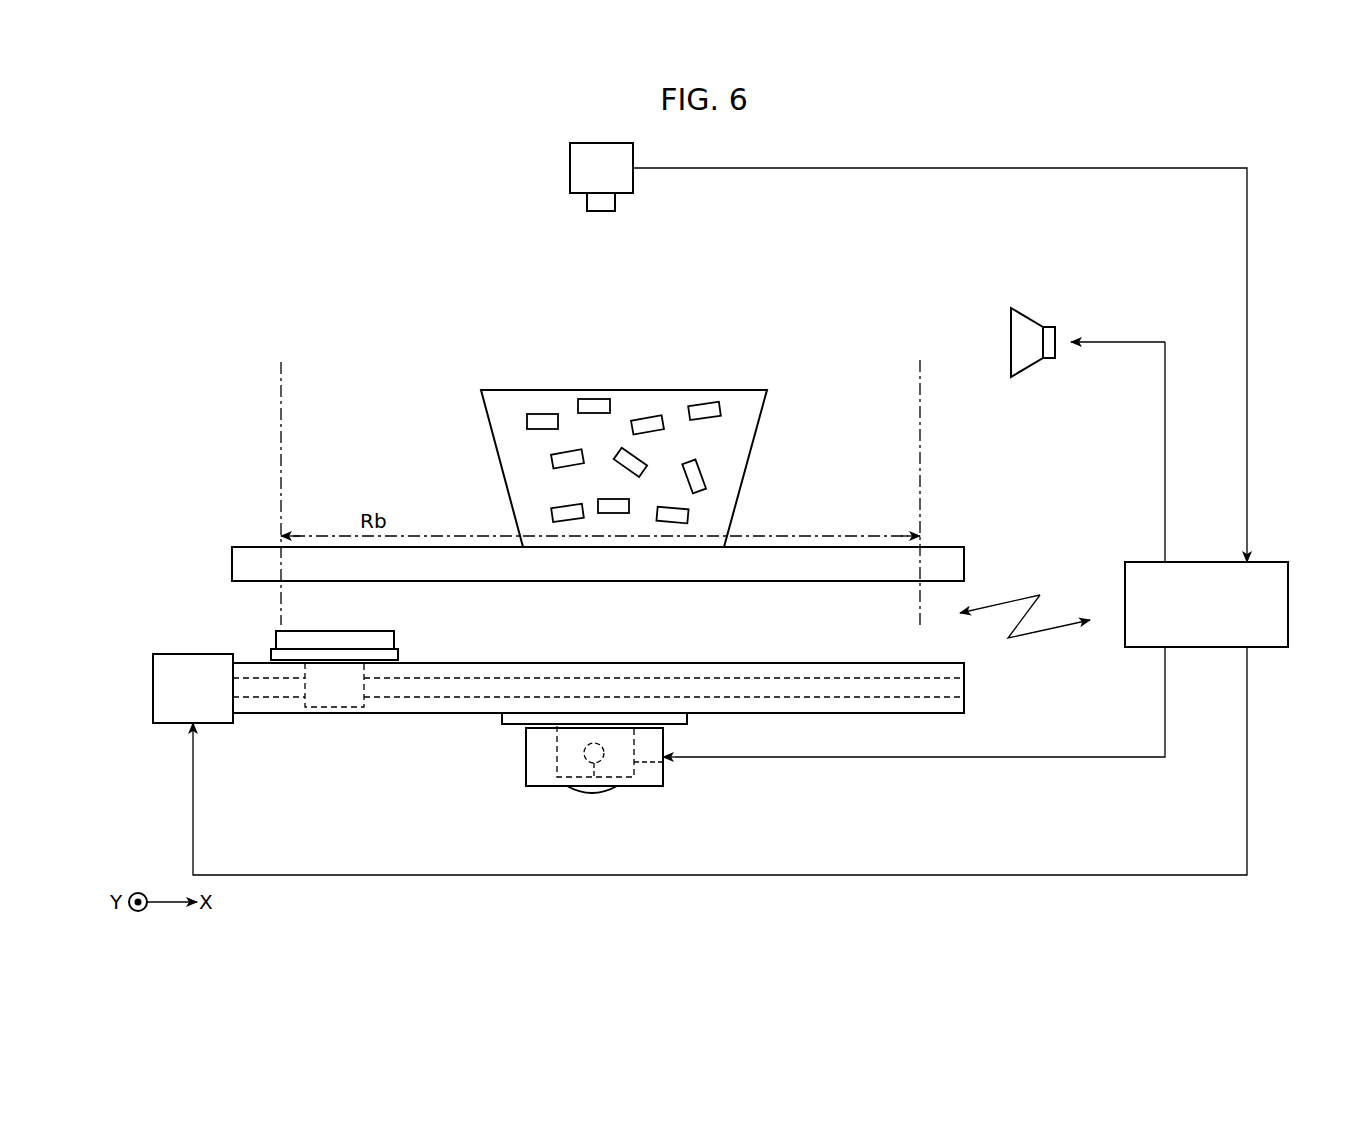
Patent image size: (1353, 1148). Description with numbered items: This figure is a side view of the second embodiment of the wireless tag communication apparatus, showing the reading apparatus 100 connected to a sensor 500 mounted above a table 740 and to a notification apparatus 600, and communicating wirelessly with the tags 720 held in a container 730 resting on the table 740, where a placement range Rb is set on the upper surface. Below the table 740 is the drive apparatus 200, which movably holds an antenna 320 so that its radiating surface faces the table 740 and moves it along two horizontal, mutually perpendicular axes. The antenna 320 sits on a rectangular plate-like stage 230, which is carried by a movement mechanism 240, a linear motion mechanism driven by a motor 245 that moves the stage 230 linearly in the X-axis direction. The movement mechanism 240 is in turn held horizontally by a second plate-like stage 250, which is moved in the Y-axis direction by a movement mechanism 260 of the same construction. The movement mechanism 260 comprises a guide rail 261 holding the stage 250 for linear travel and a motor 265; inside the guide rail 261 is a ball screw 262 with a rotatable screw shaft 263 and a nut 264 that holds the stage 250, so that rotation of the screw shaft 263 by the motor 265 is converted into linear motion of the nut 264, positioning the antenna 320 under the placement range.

The reading apparatus 100 is at (1271, 562).
The drive apparatus 200 is at (992, 723).
The stage 230 is at (398, 654).
The movement mechanism 240 is at (508, 662).
The motor 245 is at (183, 654).
The stage 250 is at (687, 716).
The movement mechanism 260 is at (473, 788).
The guide rail 261 is at (526, 757).
The ball screw 262 is at (480, 767).
The screw shaft 263 is at (352, 775).
The nut 264 is at (338, 709).
The motor 265 is at (588, 792).
The antenna 320 is at (356, 631).
The sensor 500 is at (570, 165).
The notification apparatus 600 is at (1032, 316).
The RFID tags 720 is at (593, 399).
The hopper 730 is at (762, 423).
The table 740 is at (945, 547).